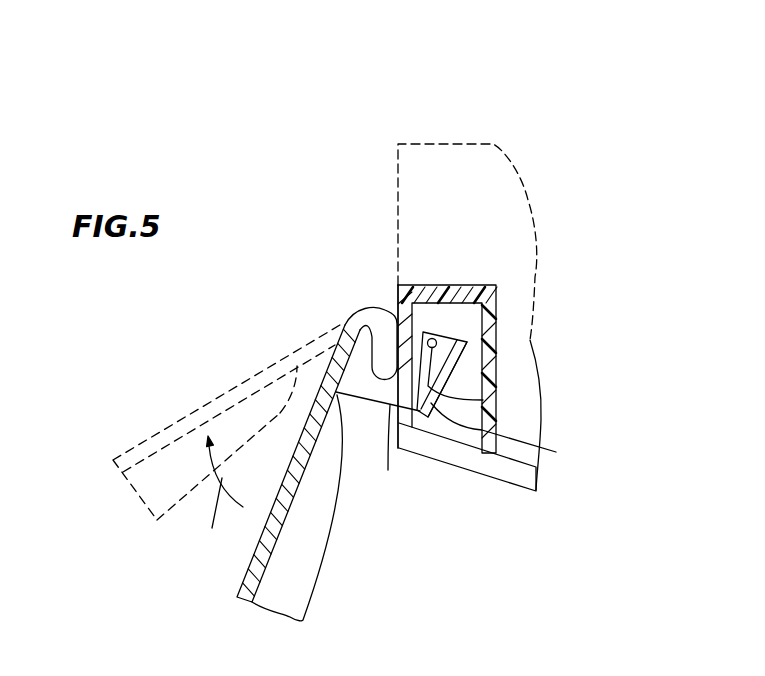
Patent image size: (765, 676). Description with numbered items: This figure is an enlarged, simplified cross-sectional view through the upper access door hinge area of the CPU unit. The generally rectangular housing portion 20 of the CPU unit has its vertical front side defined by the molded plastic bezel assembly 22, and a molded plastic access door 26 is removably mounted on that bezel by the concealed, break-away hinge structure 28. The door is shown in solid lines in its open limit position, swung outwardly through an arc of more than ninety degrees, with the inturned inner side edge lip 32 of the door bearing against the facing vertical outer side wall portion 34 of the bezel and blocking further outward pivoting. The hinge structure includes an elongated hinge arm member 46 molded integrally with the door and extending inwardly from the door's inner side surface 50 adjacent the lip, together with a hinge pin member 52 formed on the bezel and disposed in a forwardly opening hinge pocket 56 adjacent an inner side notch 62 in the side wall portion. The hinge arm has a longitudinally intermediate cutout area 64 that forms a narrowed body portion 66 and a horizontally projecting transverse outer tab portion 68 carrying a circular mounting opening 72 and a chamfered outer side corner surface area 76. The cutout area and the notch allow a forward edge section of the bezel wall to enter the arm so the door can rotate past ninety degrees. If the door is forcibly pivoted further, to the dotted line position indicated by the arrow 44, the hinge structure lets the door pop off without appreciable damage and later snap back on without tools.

The housing portion 20 is at (497, 143).
The bezel assembly 22 is at (524, 497).
The access door 26 is at (170, 417).
The hinge structure 28 is at (458, 382).
The inner side edge lip 32 is at (380, 308).
The outer side wall portion 34 is at (395, 290).
The arrow 44 is at (219, 493).
The upper hinge arm member 46 is at (373, 398).
The inner side surface 50 is at (283, 512).
The hinge pin member 52 is at (435, 338).
The upper hinge pocket 56 is at (497, 312).
The inner side notch 62 is at (420, 420).
The cutout area 64 is at (350, 318).
The narrowed body portion 66 is at (392, 451).
The outer tab portion 68 is at (497, 338).
The mounting opening 72 is at (493, 447).
The chamfered outer side corner surface area 76 is at (483, 400).